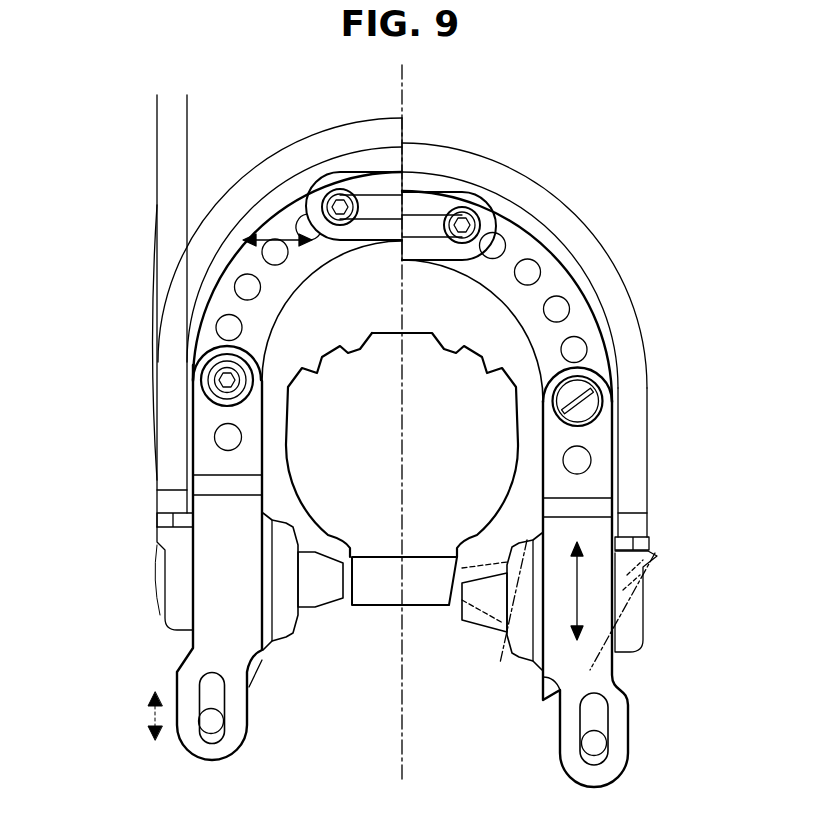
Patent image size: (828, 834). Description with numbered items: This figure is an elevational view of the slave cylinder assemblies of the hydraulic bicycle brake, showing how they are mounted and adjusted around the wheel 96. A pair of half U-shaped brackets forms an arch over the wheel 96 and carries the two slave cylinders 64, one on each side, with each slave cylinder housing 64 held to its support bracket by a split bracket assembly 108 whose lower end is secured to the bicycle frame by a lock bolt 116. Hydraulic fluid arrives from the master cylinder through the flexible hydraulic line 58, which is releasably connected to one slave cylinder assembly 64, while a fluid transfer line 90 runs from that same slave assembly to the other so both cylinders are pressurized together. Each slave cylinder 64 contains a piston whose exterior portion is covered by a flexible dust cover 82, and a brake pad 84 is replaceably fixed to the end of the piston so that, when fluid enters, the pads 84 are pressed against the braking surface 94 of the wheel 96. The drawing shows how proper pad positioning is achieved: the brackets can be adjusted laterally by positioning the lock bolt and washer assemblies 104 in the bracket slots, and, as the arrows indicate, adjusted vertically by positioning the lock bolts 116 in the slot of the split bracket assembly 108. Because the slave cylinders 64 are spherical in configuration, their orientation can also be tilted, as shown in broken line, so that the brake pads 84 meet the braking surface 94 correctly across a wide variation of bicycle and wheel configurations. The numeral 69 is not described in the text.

The flexible hydraulic line 58 is at (160, 213).
The fluid transfer line 90 is at (609, 242).
The lock bolt and washer assembly 104 is at (350, 201).
The wheel 96 is at (427, 347).
The braking surface 94 is at (350, 598).
The flexible dust cover 82 is at (282, 520).
The brake pad 84 is at (309, 615).
The frame end cap 69 is at (178, 612).
The split bracket assembly 108 is at (203, 644).
The lock bolt 116 is at (608, 722).
The slave cylinder assembly 64 is at (638, 636).